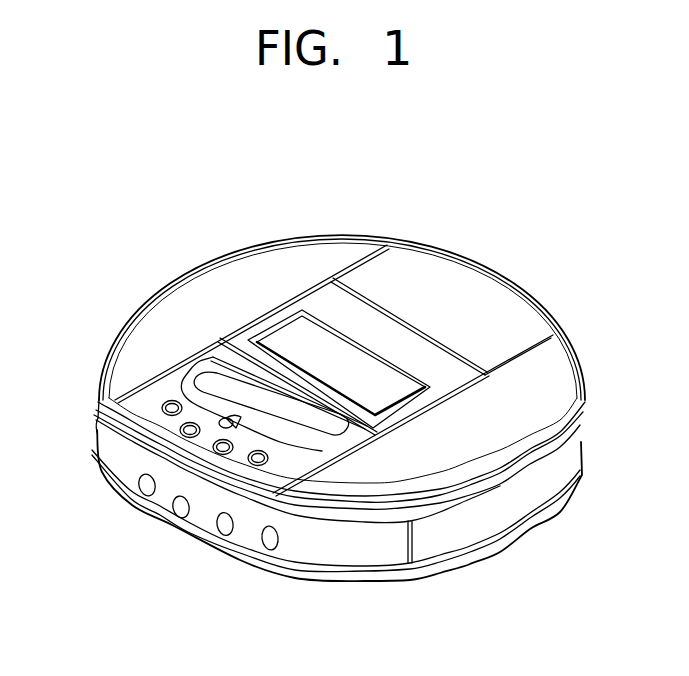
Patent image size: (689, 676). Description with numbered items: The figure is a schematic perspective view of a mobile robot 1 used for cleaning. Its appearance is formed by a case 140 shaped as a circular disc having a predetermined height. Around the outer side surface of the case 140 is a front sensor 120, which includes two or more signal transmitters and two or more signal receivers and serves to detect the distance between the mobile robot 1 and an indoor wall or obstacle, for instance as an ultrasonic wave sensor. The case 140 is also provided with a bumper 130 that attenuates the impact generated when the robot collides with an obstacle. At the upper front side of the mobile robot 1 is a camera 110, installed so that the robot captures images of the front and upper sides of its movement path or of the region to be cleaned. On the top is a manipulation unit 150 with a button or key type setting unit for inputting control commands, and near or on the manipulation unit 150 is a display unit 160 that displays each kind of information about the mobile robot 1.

The mobile robot 1 is at (261, 240).
The camera 110 is at (186, 418).
The front sensor 120 is at (258, 606).
The bumper 130 is at (481, 531).
The case 140 is at (523, 471).
The manipulation unit 150 is at (153, 390).
The display unit 160 is at (283, 332).